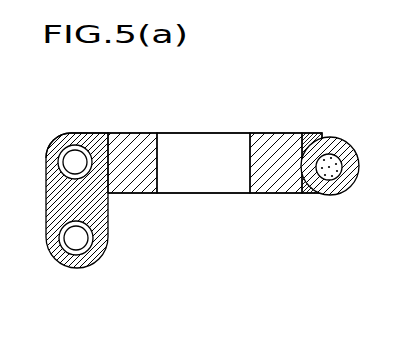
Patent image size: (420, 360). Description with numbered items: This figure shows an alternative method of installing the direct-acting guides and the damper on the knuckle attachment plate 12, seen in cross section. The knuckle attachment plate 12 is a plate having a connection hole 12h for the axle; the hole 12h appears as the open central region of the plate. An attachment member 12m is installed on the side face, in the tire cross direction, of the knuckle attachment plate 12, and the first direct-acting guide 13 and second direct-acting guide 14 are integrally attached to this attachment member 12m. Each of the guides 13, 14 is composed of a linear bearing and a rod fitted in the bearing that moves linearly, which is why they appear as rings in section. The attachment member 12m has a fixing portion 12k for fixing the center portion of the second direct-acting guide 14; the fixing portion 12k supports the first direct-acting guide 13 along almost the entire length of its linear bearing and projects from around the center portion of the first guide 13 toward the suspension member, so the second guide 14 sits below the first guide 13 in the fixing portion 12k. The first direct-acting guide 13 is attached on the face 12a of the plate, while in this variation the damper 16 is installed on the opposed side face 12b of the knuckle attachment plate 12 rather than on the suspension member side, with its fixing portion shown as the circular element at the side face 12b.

The knuckle attachment plate 12 is at (186, 196).
The attachment member 12m is at (100, 133).
The connection hole 12h is at (197, 143).
The face 12a is at (108, 170).
The side face 12b is at (284, 193).
The fixing portion 12k is at (100, 237).
The first direct-acting guide 13 is at (108, 203).
The second direct-acting guide 14 is at (88, 242).
The damper 16 is at (328, 167).